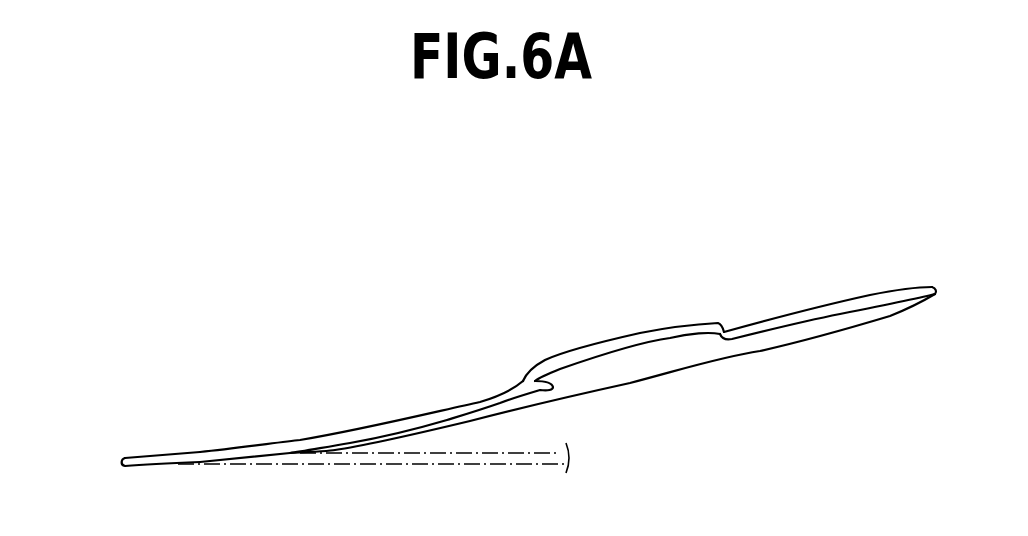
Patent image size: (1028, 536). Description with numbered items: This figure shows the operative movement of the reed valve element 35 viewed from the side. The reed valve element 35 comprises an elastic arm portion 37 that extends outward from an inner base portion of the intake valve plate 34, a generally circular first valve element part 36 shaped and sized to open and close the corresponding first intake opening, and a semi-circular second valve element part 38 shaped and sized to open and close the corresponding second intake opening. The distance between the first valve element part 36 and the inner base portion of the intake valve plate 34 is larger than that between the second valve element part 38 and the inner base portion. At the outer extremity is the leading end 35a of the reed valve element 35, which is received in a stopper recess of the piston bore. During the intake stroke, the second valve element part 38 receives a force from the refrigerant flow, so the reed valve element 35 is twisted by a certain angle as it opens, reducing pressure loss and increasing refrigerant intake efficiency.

The intake valve plate 34 is at (160, 456).
The reed valve element 35 is at (579, 338).
The leading end 35a is at (934, 287).
The first valve element part 36 is at (873, 290).
The elastic arm portion 37 is at (443, 410).
The second valve element part 38 is at (680, 322).